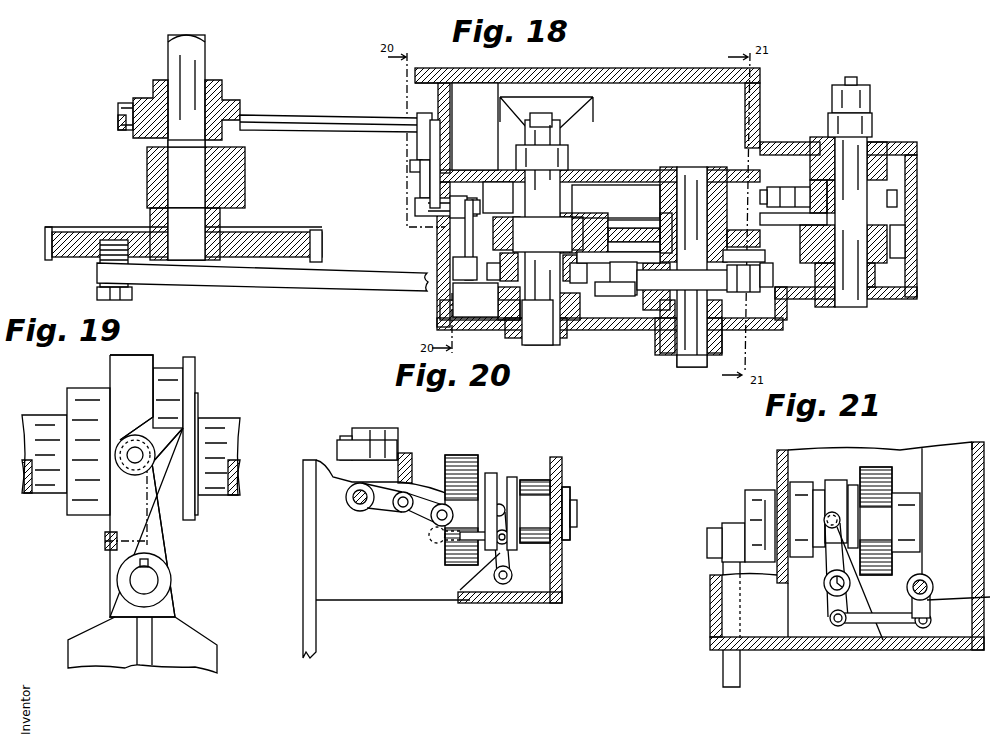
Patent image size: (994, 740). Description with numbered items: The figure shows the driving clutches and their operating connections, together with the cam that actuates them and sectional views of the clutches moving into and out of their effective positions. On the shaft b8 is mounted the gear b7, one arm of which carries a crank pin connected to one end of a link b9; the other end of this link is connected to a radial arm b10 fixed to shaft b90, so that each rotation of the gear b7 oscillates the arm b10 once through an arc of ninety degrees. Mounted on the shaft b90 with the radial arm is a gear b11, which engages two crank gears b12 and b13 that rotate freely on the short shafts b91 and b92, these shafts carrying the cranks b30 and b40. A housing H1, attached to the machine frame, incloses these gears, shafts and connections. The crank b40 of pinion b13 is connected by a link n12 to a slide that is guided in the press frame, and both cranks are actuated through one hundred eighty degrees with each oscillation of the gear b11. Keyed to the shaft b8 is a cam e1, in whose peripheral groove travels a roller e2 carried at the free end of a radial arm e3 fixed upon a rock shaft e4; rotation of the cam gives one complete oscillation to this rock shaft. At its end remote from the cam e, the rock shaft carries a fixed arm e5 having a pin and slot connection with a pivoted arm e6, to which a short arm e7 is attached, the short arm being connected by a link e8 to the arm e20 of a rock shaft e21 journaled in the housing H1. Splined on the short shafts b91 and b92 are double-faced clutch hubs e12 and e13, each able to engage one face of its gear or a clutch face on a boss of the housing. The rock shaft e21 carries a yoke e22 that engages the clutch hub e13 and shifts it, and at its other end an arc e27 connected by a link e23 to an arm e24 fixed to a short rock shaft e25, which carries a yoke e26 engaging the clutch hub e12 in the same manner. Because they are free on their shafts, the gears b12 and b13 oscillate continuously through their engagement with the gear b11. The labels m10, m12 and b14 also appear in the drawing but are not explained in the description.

In FIG. 18, the shaft b8 is at (205, 50).
In FIG. 19, the shaft b8 is at (220, 420).
In FIG. 18, the roller e2 is at (133, 103).
In FIG. 19, the roller e2 is at (135, 455).
In FIG. 18, the radial arm e3 is at (126, 130).
In FIG. 19, the radial arm e3 is at (155, 528).
In FIG. 18, the cam e is at (245, 113).
In FIG. 18, the rock shaft e4 is at (392, 118).
In FIG. 19, the rock shaft e4 is at (147, 580).
In FIG. 20, the rock shaft e4 is at (352, 505).
In FIG. 18, the gear b7 is at (45, 237).
In FIG. 18, the link b9 is at (302, 282).
In FIG. 18, the housing H1 is at (800, 325).
In FIG. 20, the housing H1 is at (563, 585).
In FIG. 21, the housing H1 is at (847, 567).
In FIG. 18, the funnel m10 is at (567, 110).
In FIG. 18, the shaft m12 is at (565, 145).
In FIG. 18, the crank b40 is at (570, 167).
In FIG. 20, the crank b40 is at (395, 445).
In FIG. 18, the crank gear b13 is at (572, 217).
In FIG. 20, the crank gear b13 is at (462, 458).
In FIG. 18, the gear b11 is at (612, 230).
In FIG. 18, the radial arm b10 is at (608, 330).
In FIG. 18, the shaft b90 is at (690, 362).
In FIG. 18, the short shaft b92 is at (537, 347).
In FIG. 20, the short shaft b92 is at (582, 520).
In FIG. 18, the rock shaft e21 is at (598, 290).
In FIG. 20, the rock shaft e21 is at (508, 584).
In FIG. 21, the rock shaft e21 is at (930, 578).
In FIG. 18, the arc e27 is at (745, 292).
In FIG. 18, the clutch hub e12 is at (897, 207).
In FIG. 21, the clutch hub e12 is at (828, 482).
In FIG. 18, the link e23 is at (775, 278).
In FIG. 21, the link e23 is at (885, 618).
In FIG. 18, the short shaft b91 is at (858, 307).
In FIG. 18, the nut / stem b14 is at (872, 105).
In FIG. 21, the nut / stem b14 is at (724, 660).
In FIG. 18, the crank b30 is at (874, 130).
In FIG. 21, the crank b30 is at (745, 510).
In FIG. 18, the short rock shaft e25 is at (772, 183).
In FIG. 21, the short rock shaft e25 is at (825, 583).
In FIG. 18, the yoke e26 is at (897, 193).
In FIG. 21, the yoke e26 is at (835, 570).
In FIG. 18, the crank gear b12 is at (905, 235).
In FIG. 21, the crank gear b12 is at (880, 470).
In FIG. 18, the fixed arm e5 is at (420, 142).
In FIG. 20, the fixed arm e5 is at (380, 502).
In FIG. 18, the pivoted arm e6 is at (420, 188).
In FIG. 20, the pivoted arm e6 is at (420, 512).
In FIG. 18, the short arm e7 is at (478, 158).
In FIG. 20, the short arm e7 is at (433, 542).
In FIG. 18, the link e8 is at (465, 243).
In FIG. 20, the link e8 is at (470, 540).
In FIG. 18, the yoke e22 is at (487, 270).
In FIG. 20, the yoke e22 is at (540, 520).
In FIG. 18, the clutch hub e13 is at (490, 302).
In FIG. 20, the clutch hub e13 is at (497, 478).
In FIG. 19, the cam e1 is at (160, 368).
In FIG. 20, the link n12 is at (367, 430).
In FIG. 20, the arm e20 is at (476, 593).
In FIG. 21, the arm e24 is at (837, 607).